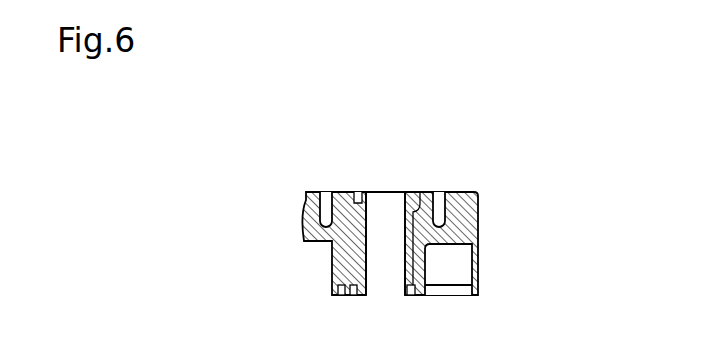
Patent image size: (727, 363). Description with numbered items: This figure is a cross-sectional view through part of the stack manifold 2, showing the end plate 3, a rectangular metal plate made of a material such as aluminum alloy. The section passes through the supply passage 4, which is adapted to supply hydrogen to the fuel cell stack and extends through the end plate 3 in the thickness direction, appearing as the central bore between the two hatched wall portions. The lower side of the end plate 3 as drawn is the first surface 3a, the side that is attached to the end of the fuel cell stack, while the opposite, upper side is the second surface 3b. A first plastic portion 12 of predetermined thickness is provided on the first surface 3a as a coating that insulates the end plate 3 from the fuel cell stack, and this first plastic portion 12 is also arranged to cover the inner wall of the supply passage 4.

The stack manifold 2 is at (409, 232).
The end plate 3 is at (472, 223).
The first surface 3a is at (472, 252).
The second surface 3b is at (427, 192).
The supply passage 4 is at (366, 250).
The first plastic portion 12 is at (404, 270).